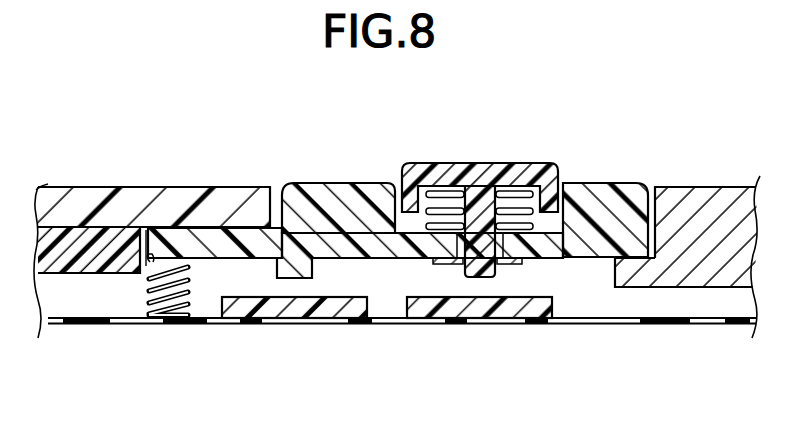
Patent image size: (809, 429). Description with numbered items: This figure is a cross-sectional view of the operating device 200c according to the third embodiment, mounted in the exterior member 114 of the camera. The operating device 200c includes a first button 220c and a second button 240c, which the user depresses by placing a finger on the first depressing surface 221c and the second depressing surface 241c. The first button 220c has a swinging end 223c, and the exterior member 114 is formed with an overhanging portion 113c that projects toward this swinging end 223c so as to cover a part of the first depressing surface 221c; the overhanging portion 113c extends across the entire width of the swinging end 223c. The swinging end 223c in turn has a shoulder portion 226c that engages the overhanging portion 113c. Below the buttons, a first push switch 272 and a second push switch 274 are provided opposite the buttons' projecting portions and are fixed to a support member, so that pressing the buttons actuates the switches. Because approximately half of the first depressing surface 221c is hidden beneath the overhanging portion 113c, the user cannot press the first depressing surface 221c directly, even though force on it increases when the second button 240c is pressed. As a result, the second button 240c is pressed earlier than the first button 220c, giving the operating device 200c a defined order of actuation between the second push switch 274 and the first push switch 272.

The operating device 200c is at (622, 146).
The overhanging portion 113c is at (180, 200).
The shoulder portion 226c is at (240, 227).
The first depressing surface 221c is at (292, 186).
The first button 220c is at (325, 182).
The second button 240c is at (511, 163).
The second depressing surface 241c is at (453, 163).
The exterior member 114 is at (710, 212).
The swinging end 223c is at (150, 247).
The first push switch 272 is at (260, 320).
The second push switch 274 is at (518, 312).